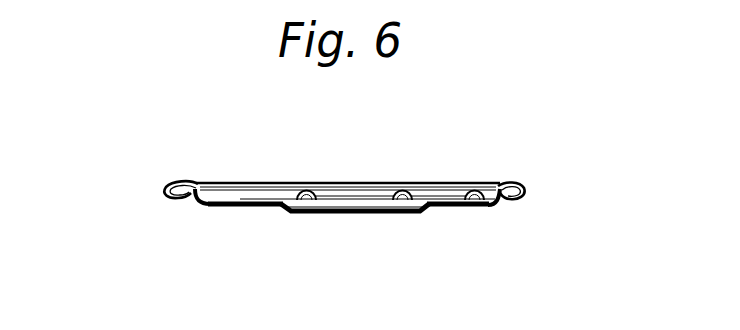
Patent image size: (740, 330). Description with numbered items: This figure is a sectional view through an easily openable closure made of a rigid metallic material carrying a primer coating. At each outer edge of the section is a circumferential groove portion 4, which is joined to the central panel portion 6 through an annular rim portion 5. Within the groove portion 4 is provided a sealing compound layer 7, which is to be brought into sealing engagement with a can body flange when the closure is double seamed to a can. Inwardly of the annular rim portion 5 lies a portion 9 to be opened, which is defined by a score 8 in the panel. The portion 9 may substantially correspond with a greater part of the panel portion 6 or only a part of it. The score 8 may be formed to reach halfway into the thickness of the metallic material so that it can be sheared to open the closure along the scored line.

The circumferential groove portion 4 is at (170, 185).
The annular rim portion 5 is at (192, 211).
The panel portion 6 is at (238, 211).
The sealing compound layer 7 is at (175, 198).
The score 8 is at (219, 199).
The portion to be opened 9 is at (342, 218).